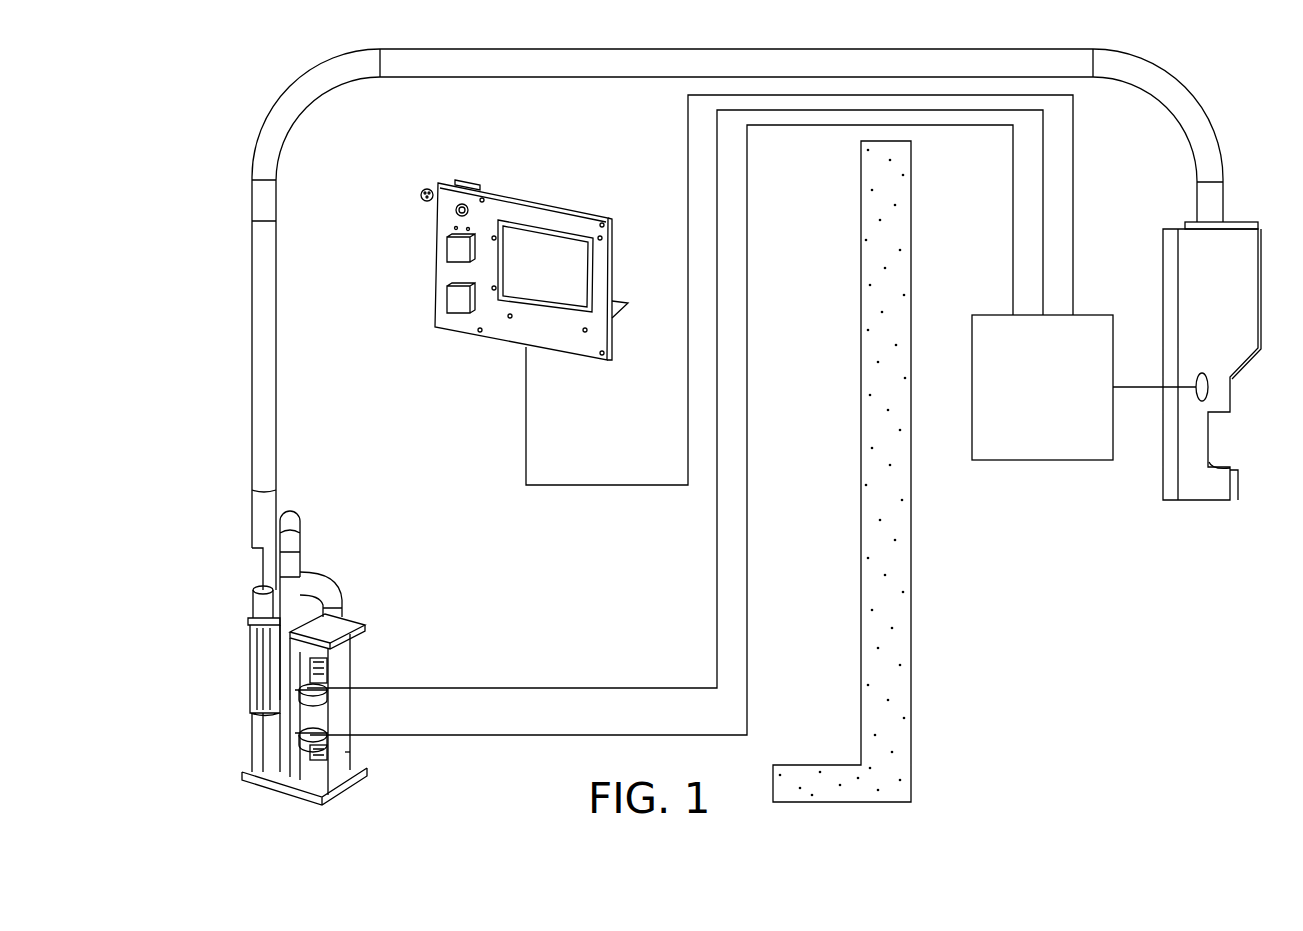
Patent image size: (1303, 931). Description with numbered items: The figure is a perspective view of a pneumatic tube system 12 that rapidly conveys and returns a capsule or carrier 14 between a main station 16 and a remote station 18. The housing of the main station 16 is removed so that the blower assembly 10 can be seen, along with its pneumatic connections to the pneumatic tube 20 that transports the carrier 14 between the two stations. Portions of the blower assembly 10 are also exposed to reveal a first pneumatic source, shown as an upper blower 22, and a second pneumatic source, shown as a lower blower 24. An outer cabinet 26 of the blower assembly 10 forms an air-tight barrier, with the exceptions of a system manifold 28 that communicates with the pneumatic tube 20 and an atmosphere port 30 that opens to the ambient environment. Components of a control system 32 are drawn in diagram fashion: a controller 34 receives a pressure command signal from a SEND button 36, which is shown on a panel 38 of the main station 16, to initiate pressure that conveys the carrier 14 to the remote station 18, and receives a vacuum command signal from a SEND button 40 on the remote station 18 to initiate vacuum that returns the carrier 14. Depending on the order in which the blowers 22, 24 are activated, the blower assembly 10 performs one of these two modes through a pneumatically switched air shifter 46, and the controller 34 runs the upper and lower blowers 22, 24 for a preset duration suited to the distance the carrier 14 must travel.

The blower assembly 10 is at (362, 648).
The pneumatic tube system 12 is at (1202, 92).
The carrier 14 is at (258, 608).
The main station 16 is at (245, 680).
The remote station 18 is at (1143, 463).
The pneumatic tube 20 is at (277, 340).
The upper blower 22 is at (308, 694).
The lower blower 24 is at (313, 733).
The outer cabinet 26 is at (317, 773).
The system manifold 28 is at (338, 612).
The atmosphere port 30 is at (358, 752).
The control system 32 is at (1092, 252).
The controller 34 is at (1056, 396).
The SEND button 36 is at (452, 301).
The control panel 38 is at (563, 203).
The SEND button 40 is at (1208, 387).
The air shifter 46 is at (352, 686).